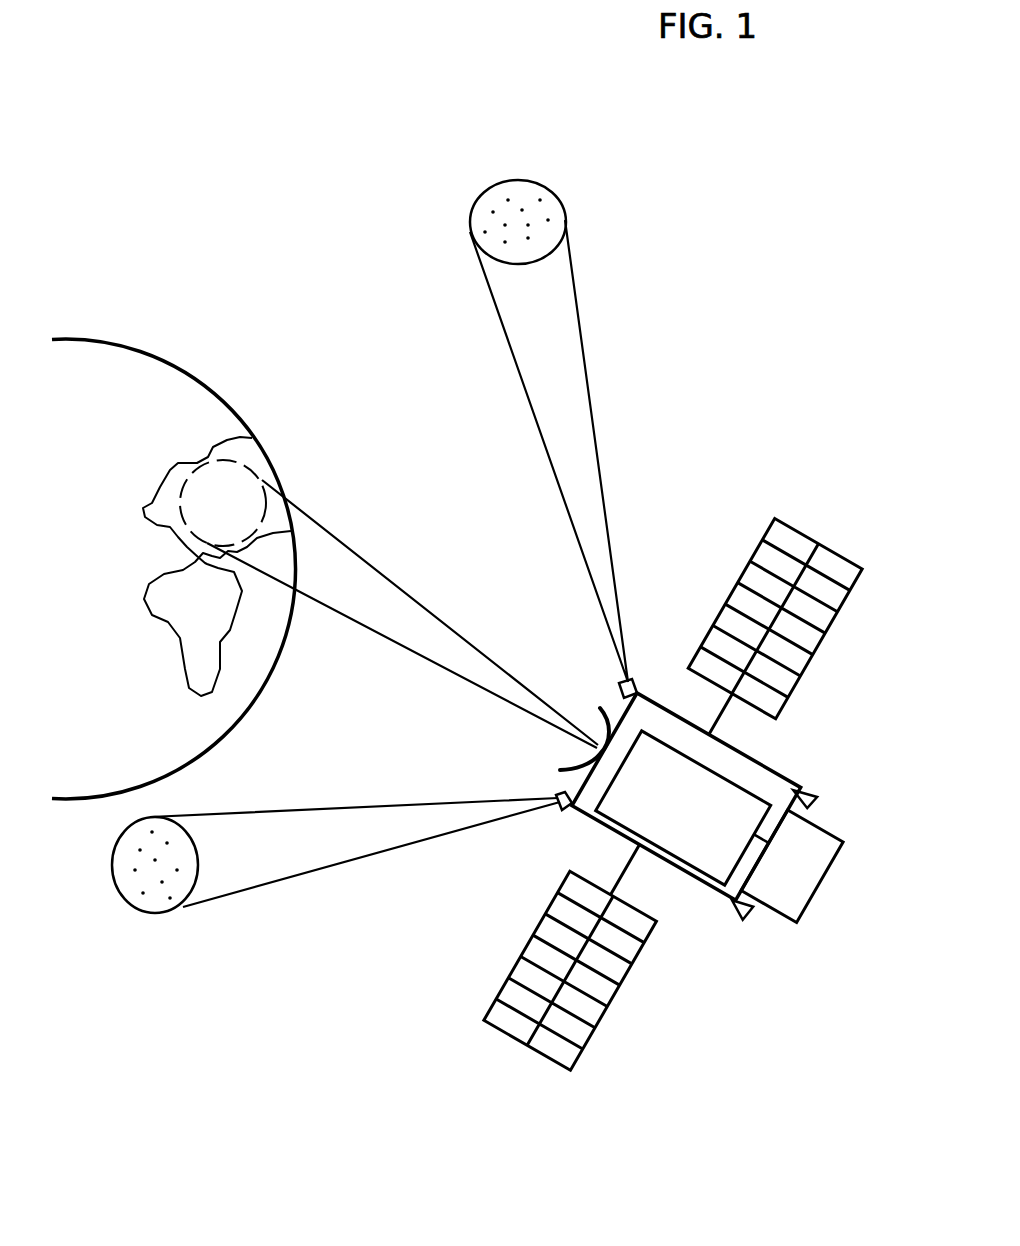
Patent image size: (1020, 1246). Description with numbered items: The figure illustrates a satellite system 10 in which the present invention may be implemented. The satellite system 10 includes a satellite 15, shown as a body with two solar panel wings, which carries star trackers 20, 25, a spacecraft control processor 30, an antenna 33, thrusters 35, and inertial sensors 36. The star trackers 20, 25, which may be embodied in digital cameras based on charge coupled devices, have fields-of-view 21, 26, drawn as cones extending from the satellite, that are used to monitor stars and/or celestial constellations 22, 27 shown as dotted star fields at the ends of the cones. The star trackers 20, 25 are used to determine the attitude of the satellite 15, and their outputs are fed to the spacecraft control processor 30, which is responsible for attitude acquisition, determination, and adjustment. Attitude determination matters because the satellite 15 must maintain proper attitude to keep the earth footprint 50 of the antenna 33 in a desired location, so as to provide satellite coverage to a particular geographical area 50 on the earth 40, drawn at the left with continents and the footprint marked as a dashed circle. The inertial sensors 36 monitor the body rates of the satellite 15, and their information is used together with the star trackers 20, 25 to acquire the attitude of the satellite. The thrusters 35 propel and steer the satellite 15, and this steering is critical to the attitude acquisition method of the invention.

The satellite system 10 is at (349, 989).
The satellite 15 is at (815, 781).
The star tracker 20 is at (558, 803).
The field-of-view 21 is at (155, 900).
The stars and/or celestial constellations 22 is at (152, 899).
The star tracker 25 is at (634, 689).
The field-of-view 26 is at (485, 199).
The stars and/or celestial constellations 27 is at (498, 212).
The spacecraft control processor 30 is at (717, 885).
The antenna 33 is at (596, 706).
The thrusters 35 is at (818, 803).
The inertial sensors 36 is at (823, 880).
The earth 40 is at (224, 402).
The earth footprint 50 is at (248, 465).